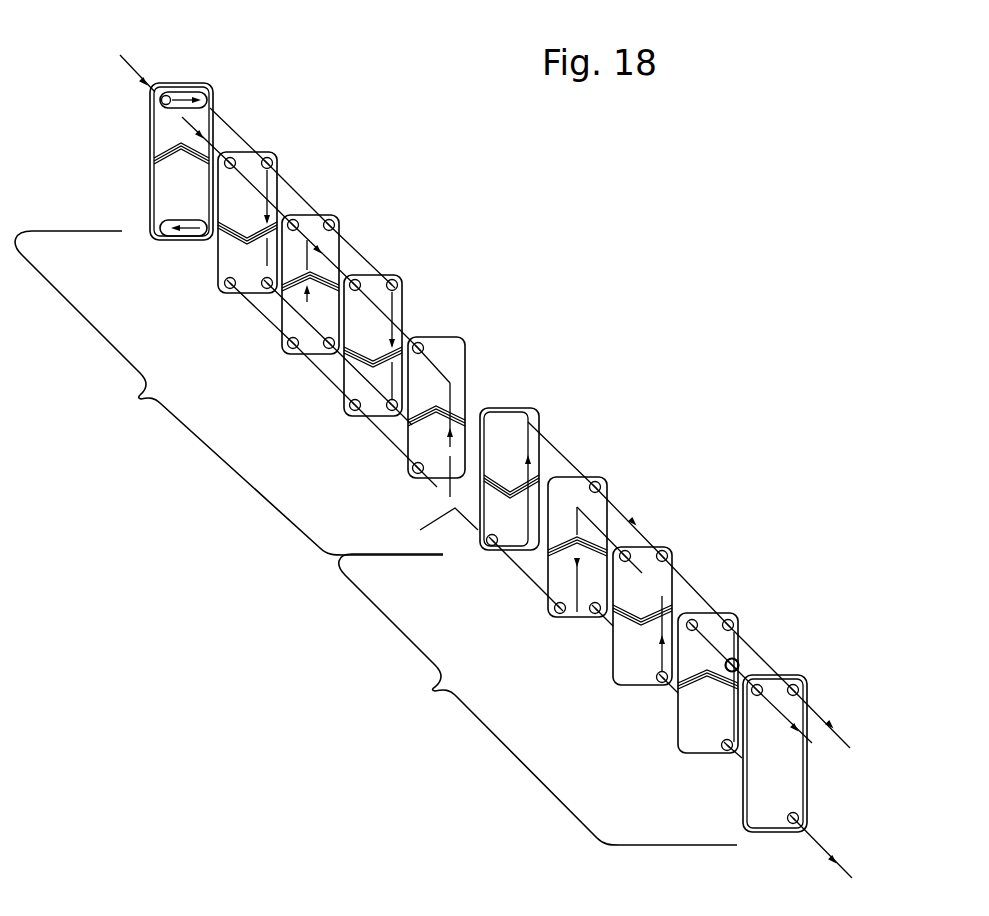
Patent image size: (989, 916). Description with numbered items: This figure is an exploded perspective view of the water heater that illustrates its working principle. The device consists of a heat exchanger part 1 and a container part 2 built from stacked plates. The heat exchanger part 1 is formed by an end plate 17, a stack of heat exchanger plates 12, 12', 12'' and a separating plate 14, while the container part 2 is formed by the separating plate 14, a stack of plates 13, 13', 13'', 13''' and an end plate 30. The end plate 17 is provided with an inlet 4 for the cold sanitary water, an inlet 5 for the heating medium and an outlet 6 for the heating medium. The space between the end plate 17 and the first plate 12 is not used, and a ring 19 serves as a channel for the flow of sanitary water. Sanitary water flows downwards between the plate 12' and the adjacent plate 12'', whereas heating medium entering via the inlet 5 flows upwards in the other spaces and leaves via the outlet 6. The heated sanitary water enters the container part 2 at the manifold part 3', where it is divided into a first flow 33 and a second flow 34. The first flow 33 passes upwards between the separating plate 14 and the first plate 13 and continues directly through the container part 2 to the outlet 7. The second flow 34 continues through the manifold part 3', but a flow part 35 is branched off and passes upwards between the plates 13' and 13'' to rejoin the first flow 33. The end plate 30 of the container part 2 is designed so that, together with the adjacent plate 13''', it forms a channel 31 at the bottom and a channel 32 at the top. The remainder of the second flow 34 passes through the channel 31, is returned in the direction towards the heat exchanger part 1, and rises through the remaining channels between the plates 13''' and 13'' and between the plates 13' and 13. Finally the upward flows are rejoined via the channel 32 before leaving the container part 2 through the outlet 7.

The heat exchanger part 1 is at (538, 699).
The container part 2 is at (229, 393).
The manifold part 3' is at (431, 529).
The inlet 4 is at (773, 675).
The inlet 5 is at (797, 815).
The outlet 6 is at (805, 685).
The outlet 7 is at (157, 98).
The heat exchanger plate 12 is at (732, 645).
The heat exchanger plate 12' is at (673, 576).
The heat exchanger plate 12'' is at (610, 507).
The plate 13 is at (463, 368).
The plate 13' is at (404, 307).
The plate 13'' is at (348, 244).
The plate 13''' is at (287, 183).
The separating plate 14 is at (515, 432).
The end plate 17 is at (763, 777).
The ring 19 is at (738, 662).
The end plate 30 is at (205, 120).
The channel 31 is at (183, 238).
The channel 32 is at (187, 95).
The first flow 33 is at (450, 383).
The second flow 34 is at (385, 438).
The flow part 35 is at (306, 314).